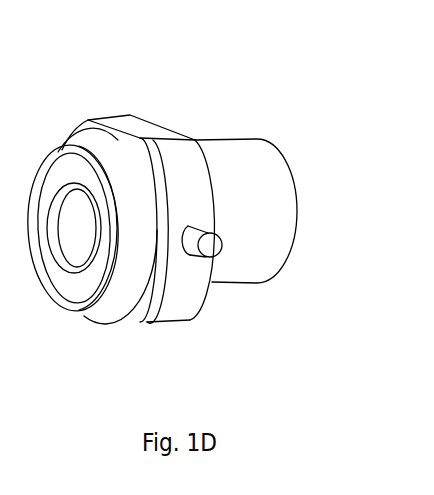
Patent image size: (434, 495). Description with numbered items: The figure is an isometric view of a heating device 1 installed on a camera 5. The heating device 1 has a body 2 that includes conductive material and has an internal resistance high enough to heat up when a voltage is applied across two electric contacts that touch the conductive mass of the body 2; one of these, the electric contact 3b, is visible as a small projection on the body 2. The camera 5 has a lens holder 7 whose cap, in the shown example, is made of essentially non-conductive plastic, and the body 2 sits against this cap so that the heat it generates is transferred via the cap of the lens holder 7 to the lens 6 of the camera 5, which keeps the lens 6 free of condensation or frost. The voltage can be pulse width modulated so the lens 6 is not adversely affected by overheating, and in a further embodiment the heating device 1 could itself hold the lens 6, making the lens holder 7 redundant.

The heating device 1 is at (149, 172).
The body 2 is at (110, 105).
The lens holder 7 is at (52, 134).
The lens 6 is at (63, 223).
The camera 5 is at (259, 158).
The electric contact 3b is at (211, 252).